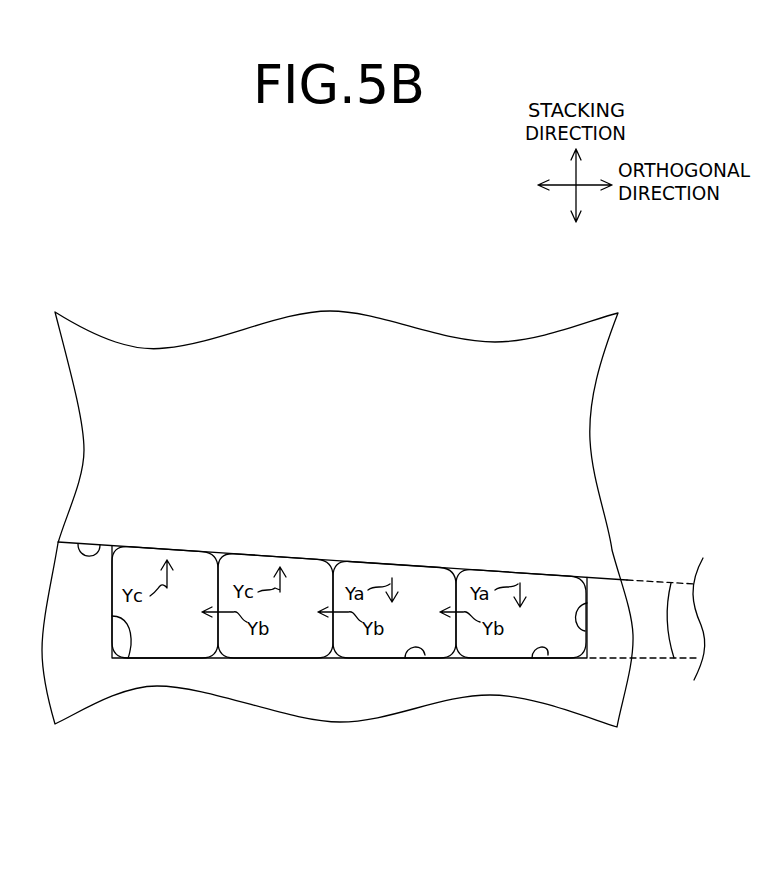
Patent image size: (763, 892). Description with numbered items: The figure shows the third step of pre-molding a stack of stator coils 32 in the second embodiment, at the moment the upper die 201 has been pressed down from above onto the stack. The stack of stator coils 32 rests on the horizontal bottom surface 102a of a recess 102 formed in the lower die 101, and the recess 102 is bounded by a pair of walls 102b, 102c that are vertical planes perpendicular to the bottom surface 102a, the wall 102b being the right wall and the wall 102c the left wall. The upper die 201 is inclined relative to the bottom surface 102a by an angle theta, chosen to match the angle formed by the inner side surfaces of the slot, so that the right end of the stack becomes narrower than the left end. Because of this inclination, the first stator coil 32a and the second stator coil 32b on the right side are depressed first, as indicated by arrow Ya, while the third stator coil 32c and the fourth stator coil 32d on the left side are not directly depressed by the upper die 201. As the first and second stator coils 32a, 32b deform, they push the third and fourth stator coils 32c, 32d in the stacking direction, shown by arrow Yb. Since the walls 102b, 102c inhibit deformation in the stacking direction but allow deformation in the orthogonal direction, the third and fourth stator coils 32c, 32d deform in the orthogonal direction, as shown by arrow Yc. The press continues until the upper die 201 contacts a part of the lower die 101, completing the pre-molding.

The lower die 101 is at (258, 687).
The recess 102 is at (425, 655).
The bottom surface 102a is at (548, 655).
The wall 102b is at (585, 631).
The wall 102c is at (128, 658).
The upper die 201 is at (100, 547).
The stator coils 32 is at (349, 582).
The first stator coil 32a is at (497, 570).
The second stator coil 32b is at (366, 559).
The third stator coil 32c is at (258, 557).
The fourth stator coil 32d is at (167, 525).